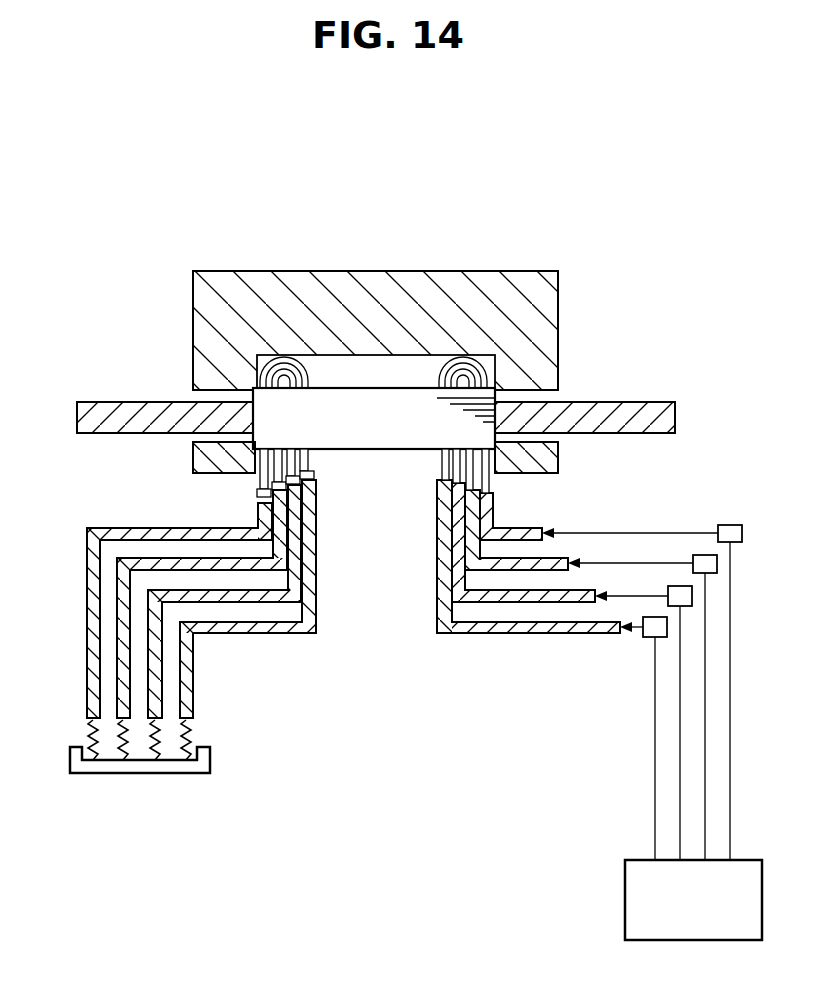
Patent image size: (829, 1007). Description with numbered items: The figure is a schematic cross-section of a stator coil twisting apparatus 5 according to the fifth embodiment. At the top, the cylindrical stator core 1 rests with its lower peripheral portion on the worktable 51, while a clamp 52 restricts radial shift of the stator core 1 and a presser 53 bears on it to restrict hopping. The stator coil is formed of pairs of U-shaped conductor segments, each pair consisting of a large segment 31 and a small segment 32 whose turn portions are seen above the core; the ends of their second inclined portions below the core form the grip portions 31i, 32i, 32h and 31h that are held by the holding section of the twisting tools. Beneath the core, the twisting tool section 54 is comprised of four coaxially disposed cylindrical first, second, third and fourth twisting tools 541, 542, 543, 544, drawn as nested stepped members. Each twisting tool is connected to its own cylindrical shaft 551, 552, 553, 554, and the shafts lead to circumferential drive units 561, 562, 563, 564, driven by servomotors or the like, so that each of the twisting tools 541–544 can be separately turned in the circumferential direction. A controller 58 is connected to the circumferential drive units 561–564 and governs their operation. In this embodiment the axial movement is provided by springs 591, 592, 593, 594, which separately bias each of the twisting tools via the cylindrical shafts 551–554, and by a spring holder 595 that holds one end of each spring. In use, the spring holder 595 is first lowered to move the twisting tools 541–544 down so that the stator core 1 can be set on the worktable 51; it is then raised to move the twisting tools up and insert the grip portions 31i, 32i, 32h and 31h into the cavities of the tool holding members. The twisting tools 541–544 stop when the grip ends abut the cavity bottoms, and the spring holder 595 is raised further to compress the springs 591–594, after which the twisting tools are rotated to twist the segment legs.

The stator core 1 is at (399, 408).
The twisting apparatus 5 is at (356, 252).
The large segment 31 is at (290, 372).
The small segment 32 is at (266, 358).
The grip portion 31h is at (312, 457).
The grip portion 32h is at (312, 477).
The grip portion 31i is at (262, 483).
The grip portion 32i is at (277, 463).
The worktable 51 is at (540, 465).
The clamp 52 is at (638, 418).
The presser 53 is at (470, 300).
The twisting tool section 54 is at (504, 509).
The first twisting tool 541 is at (262, 512).
The second twisting tool 542 is at (270, 520).
The third twisting tool 543 is at (312, 503).
The fourth twisting tool 544 is at (316, 530).
The shaft 551 is at (150, 597).
The shaft 552 is at (157, 604).
The shaft 553 is at (269, 601).
The shaft 554 is at (285, 599).
The circumferential drive unit 561 is at (737, 543).
The circumferential drive unit 562 is at (717, 567).
The circumferential drive unit 563 is at (692, 596).
The circumferential drive unit 564 is at (667, 627).
The controller 58 is at (643, 868).
The spring 591 is at (89, 728).
The spring 592 is at (110, 742).
The spring 593 is at (165, 742).
The spring 594 is at (190, 735).
The spring holder 595 is at (210, 760).